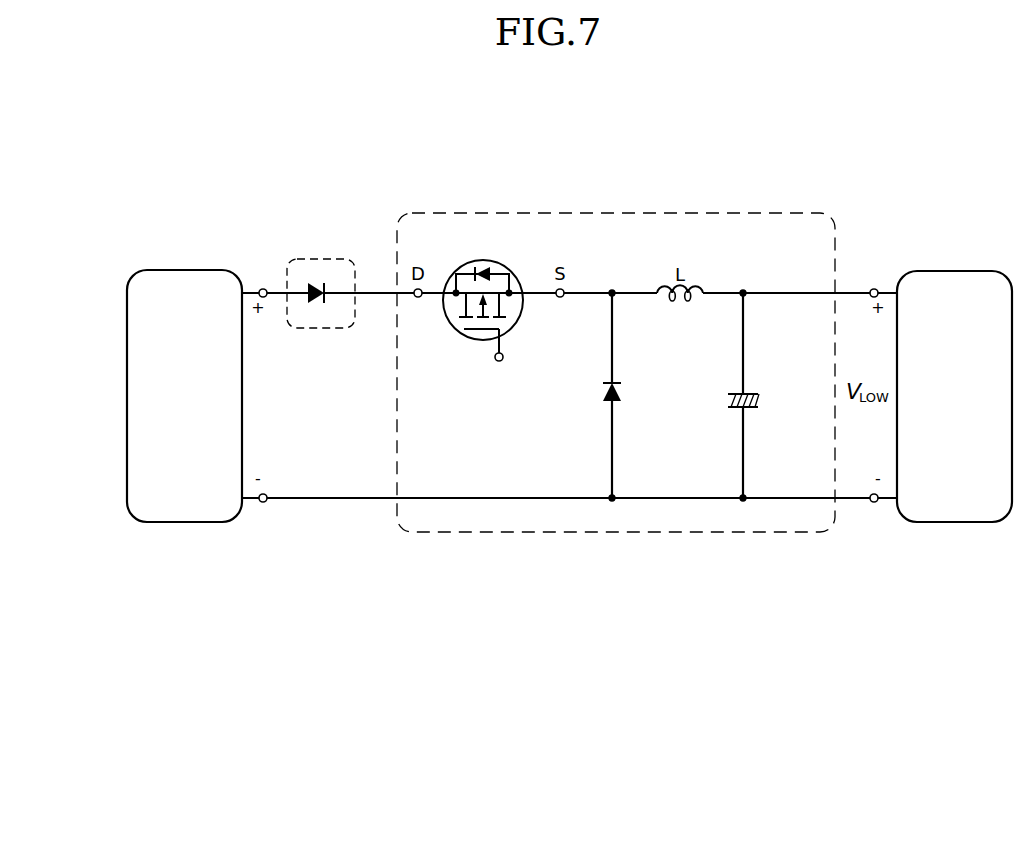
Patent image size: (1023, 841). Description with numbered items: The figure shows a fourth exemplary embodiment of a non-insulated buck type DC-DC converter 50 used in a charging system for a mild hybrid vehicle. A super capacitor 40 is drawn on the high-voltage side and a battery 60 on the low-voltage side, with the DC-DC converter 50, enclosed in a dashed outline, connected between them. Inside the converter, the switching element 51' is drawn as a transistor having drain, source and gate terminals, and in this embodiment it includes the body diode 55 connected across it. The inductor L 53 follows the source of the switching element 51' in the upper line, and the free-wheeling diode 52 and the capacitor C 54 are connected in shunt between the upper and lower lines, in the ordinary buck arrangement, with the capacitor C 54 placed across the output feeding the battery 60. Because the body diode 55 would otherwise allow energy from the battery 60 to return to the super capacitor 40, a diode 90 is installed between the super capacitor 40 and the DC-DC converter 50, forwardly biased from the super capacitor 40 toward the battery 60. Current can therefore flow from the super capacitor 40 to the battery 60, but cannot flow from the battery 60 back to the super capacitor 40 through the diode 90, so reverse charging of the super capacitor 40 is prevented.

The super capacitor 40 is at (182, 270).
The diode 90 is at (325, 259).
The DC-DC converter 50 is at (632, 213).
The switching element 51' is at (494, 293).
The body diode 55 is at (490, 273).
The inductor L 53 is at (701, 283).
The free-wheeling diode 52 is at (622, 383).
The capacitor C 54 is at (751, 394).
The battery 60 is at (951, 271).